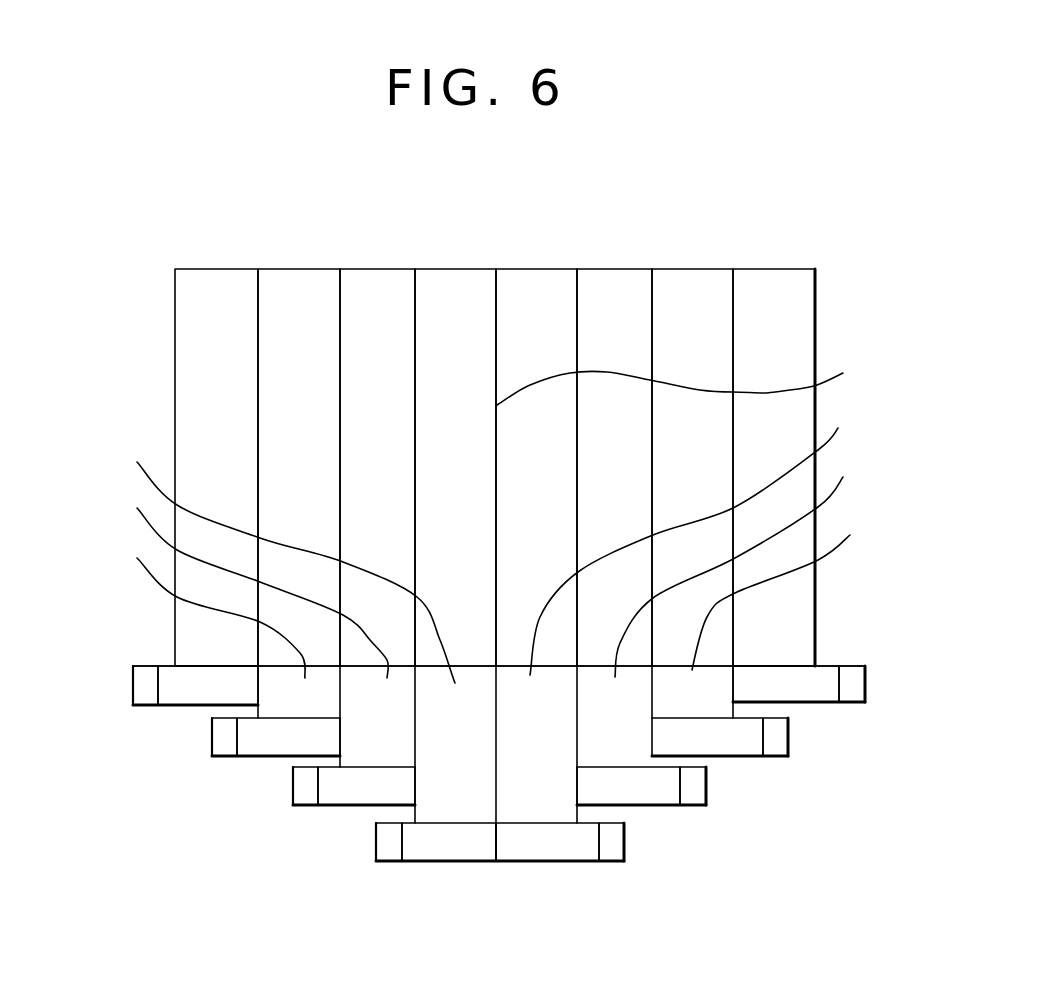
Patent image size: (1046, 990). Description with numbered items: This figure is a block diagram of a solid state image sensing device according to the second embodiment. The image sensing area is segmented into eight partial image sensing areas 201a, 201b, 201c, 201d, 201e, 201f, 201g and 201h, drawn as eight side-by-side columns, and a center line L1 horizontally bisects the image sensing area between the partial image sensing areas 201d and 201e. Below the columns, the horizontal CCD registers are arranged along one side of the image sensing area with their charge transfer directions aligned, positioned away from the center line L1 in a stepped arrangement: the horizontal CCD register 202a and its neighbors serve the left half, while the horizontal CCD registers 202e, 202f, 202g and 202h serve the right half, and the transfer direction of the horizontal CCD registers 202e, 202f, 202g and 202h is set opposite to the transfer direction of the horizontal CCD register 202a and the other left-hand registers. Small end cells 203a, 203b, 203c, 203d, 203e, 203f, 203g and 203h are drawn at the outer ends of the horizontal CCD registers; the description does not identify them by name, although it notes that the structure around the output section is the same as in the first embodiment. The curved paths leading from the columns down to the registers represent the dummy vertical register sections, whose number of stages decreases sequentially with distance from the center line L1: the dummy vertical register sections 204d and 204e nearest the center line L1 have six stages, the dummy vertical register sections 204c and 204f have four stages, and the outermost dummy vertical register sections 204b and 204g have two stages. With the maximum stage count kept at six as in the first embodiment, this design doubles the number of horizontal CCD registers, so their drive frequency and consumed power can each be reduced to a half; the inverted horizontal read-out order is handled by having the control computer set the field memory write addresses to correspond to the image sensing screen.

The partial image sensing area 201a is at (206, 280).
The partial image sensing area 201b is at (294, 280).
The partial image sensing area 201c is at (382, 280).
The partial image sensing area 201d is at (457, 280).
The partial image sensing area 201e is at (531, 280).
The partial image sensing area 201f is at (611, 280).
The partial image sensing area 201g is at (688, 280).
The partial image sensing area 201h is at (764, 280).
The horizontal CCD register 202a is at (183, 697).
The horizontal CCD register 202e is at (573, 848).
The horizontal CCD register 202f is at (660, 798).
The horizontal CCD register 202g is at (742, 740).
The horizontal CCD register 202h is at (818, 683).
The narrow pad portion 203a is at (147, 682).
The narrow pad portion 203b is at (223, 747).
The narrow pad portion 203c is at (302, 810).
The narrow pad portion 203d is at (383, 862).
The narrow pad portion 203e is at (610, 848).
The narrow pad portion 203f is at (693, 793).
The narrow pad portion 203g is at (777, 738).
The narrow pad portion 203h is at (860, 663).
The dummy vertical register section 204b is at (186, 611).
The dummy vertical register section 204c is at (228, 586).
The dummy vertical register section 204d is at (261, 565).
The dummy vertical register section 204e is at (719, 544).
The dummy vertical register section 204f is at (760, 569).
The dummy vertical register section 204g is at (804, 595).
The center line L1 is at (685, 384).